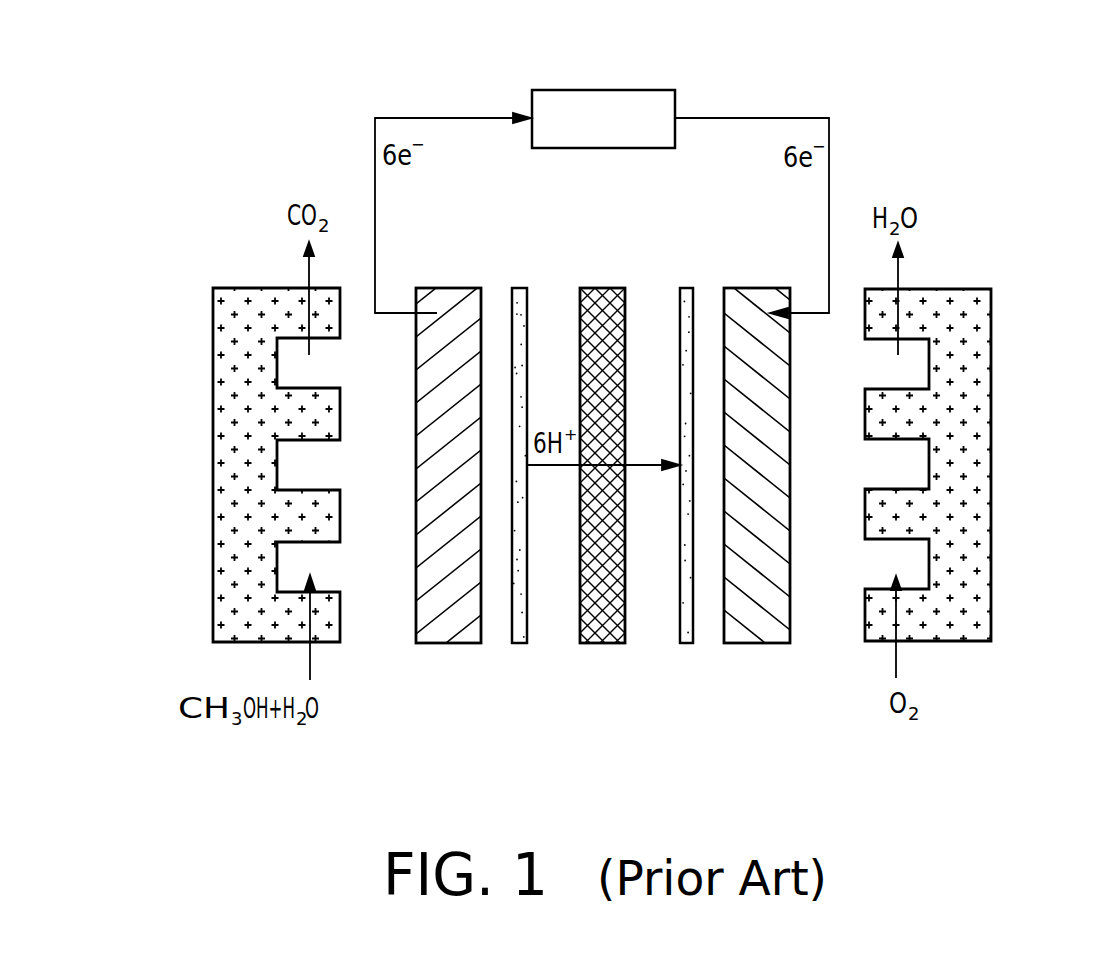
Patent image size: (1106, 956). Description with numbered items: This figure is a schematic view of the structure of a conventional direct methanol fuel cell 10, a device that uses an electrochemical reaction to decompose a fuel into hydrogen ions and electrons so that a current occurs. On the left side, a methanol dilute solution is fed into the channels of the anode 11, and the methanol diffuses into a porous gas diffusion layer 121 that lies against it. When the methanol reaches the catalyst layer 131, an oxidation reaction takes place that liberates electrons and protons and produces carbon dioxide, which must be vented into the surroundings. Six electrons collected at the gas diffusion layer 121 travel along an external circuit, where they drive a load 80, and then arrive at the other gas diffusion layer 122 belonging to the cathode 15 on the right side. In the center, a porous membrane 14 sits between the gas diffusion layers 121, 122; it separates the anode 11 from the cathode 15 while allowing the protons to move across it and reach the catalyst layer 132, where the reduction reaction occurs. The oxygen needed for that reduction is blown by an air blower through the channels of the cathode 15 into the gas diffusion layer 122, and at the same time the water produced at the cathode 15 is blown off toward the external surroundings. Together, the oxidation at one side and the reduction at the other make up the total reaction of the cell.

The direct methanol fuel cell 10 is at (1008, 127).
The load 80 is at (602, 88).
The anode 11 is at (235, 615).
The cathode 15 is at (967, 630).
The gas diffusion layer 121 is at (453, 632).
The catalyst layer 131 is at (520, 633).
The porous membrane 14 is at (603, 632).
The catalyst layer 132 is at (687, 633).
The gas diffusion layer 122 is at (760, 632).